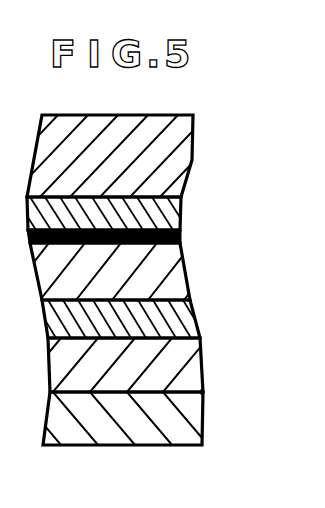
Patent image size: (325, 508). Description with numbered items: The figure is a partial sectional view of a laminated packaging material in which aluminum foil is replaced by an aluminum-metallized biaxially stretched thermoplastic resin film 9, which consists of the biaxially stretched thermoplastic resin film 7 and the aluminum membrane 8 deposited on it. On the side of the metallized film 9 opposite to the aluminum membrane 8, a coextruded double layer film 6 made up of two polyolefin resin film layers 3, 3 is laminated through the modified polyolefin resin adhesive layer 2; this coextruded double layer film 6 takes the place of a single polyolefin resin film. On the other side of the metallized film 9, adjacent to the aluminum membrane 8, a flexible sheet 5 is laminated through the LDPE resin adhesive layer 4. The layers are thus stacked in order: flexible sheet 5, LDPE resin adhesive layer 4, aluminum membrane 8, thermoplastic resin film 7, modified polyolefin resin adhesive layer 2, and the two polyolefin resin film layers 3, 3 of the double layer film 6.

The modified polyolefin resin adhesive layer 2 is at (198, 322).
The polyolefin resin film layer 3 is at (190, 375).
The LDPE resin adhesive layer 4 is at (180, 213).
The flexible sheet 5 is at (178, 153).
The coextruded double layer film 6 is at (154, 391).
The biaxially stretched thermoplastic resin film 7 is at (247, 232).
The aluminum membrane 8 is at (183, 237).
The aluminum-metallized biaxially stretched thermoplastic resin film 9 is at (144, 265).